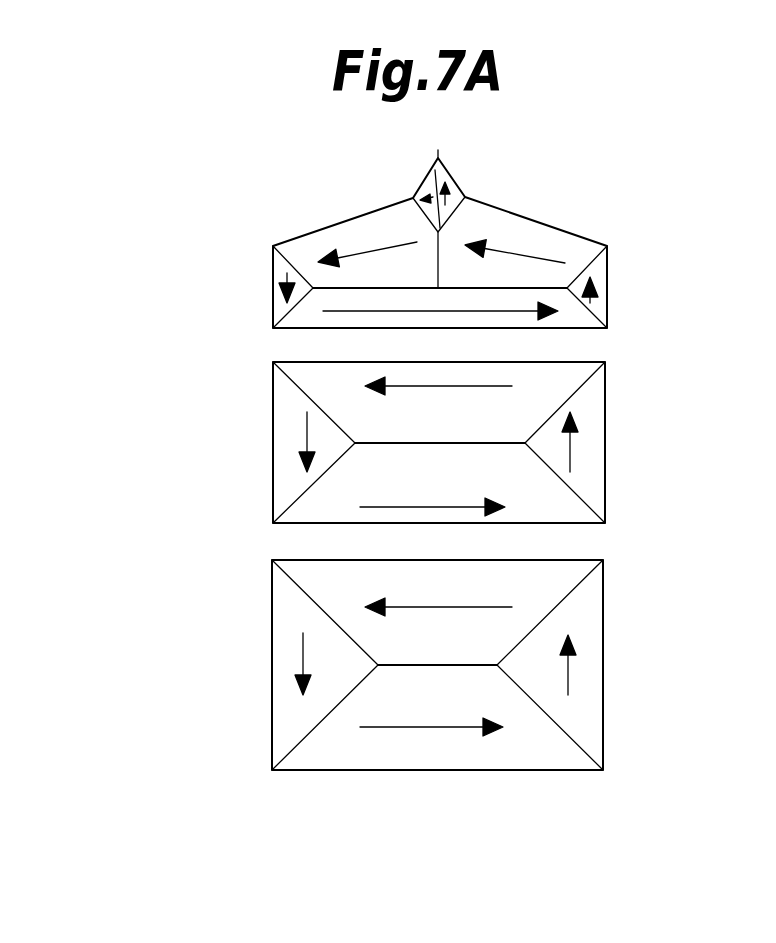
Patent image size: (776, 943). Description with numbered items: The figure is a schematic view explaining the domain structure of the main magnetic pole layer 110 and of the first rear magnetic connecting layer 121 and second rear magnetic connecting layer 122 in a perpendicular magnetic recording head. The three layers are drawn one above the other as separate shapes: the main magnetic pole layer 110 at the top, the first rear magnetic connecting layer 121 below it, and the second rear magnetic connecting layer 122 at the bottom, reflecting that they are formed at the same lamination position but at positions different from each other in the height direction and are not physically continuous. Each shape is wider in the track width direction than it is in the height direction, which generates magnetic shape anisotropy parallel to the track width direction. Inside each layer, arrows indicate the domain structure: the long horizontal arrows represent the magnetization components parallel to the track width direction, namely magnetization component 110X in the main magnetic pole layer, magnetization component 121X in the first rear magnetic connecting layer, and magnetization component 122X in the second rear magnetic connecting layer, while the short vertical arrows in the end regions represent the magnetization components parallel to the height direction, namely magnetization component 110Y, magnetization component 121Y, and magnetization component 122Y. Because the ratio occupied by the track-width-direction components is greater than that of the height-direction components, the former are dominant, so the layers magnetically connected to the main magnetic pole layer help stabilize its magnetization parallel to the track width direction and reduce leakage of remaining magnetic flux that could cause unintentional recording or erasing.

The main magnetic pole layer 110 is at (290, 273).
The magnetization component parallel to the track width direction 110X is at (487, 312).
The magnetization component parallel to the height direction 110Y is at (590, 303).
The first rear magnetic connecting layer 121 is at (300, 448).
The magnetization component parallel to the track width direction 121X is at (467, 508).
The magnetization component parallel to the height direction 121Y is at (570, 447).
The second rear magnetic connecting layer 122 is at (300, 677).
The magnetization component parallel to the track width direction 122X is at (432, 727).
The magnetization component parallel to the height direction 122Y is at (568, 668).